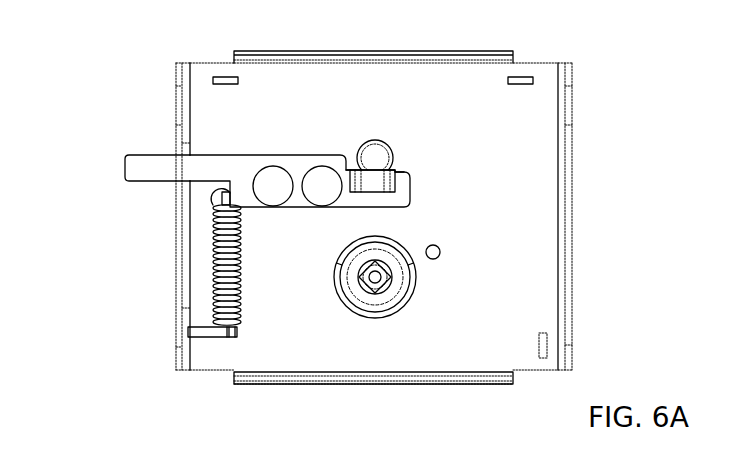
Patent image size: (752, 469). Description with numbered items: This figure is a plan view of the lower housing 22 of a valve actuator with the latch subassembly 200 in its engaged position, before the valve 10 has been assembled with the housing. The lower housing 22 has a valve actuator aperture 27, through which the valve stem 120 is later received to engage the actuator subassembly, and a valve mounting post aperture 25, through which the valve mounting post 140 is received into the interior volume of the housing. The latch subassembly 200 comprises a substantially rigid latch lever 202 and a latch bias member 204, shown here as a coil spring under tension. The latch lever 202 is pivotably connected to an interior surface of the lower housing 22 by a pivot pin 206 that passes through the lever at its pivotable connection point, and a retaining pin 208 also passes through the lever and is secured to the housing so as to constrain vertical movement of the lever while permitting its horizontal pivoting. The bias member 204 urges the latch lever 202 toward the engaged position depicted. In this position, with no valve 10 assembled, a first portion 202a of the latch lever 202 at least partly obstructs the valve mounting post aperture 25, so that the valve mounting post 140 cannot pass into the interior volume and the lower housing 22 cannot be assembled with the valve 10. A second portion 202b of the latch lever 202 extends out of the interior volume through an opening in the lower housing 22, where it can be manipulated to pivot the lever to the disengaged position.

The valve 10 is at (690, 3).
The lower housing 22 is at (507, 217).
The valve mounting post aperture 25 is at (361, 154).
The valve actuator aperture 27 is at (357, 313).
The valve stem 120 is at (395, 343).
The valve mounting post 140 is at (373, 160).
The latch subassembly 200 is at (295, 122).
The latch lever 202 is at (288, 223).
The first portion of the latch lever 202a is at (373, 182).
The second portion of the latch lever 202b is at (138, 168).
The latch bias member 204 is at (227, 281).
The pivot pin 206 is at (277, 197).
The retaining pin 208 is at (321, 197).